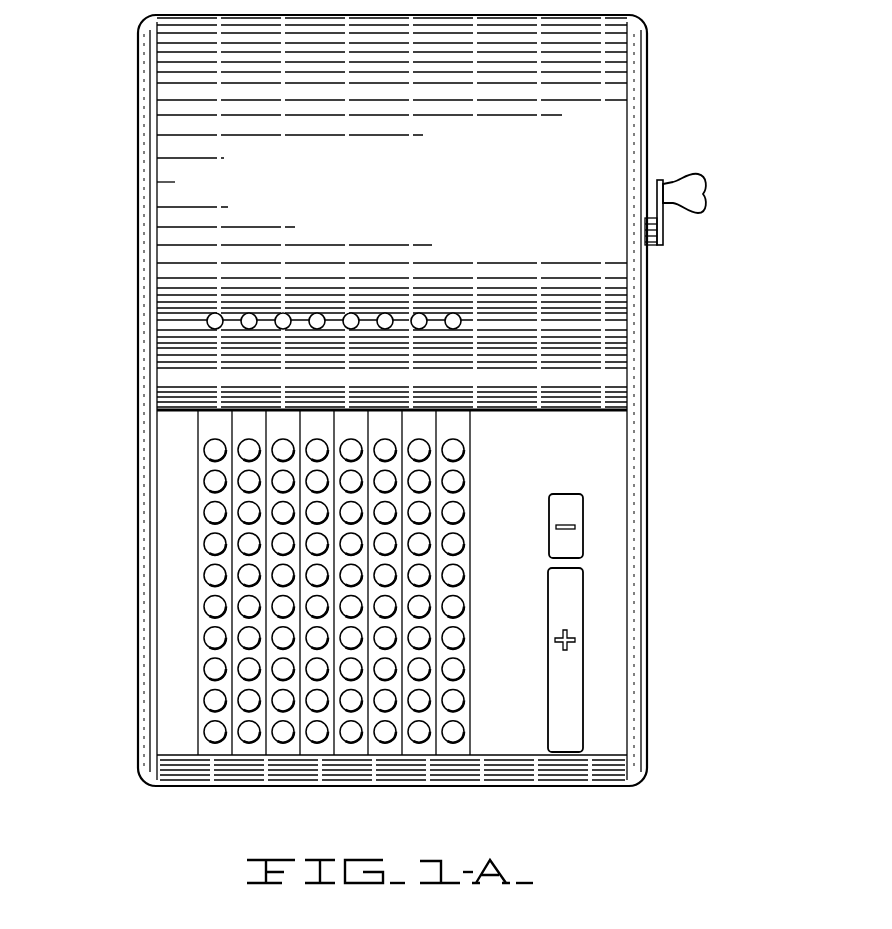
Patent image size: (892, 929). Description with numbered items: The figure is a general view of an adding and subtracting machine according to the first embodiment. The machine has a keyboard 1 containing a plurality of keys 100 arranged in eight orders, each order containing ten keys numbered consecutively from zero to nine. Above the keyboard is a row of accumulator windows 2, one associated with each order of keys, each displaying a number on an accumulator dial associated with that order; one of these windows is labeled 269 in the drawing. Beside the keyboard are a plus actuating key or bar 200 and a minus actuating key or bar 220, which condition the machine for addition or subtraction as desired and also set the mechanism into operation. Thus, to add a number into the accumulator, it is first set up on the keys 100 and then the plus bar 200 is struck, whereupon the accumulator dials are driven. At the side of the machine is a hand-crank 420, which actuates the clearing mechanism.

The keyboard 1 is at (207, 585).
The accumulator windows 2 is at (286, 314).
The indicator window 269 is at (213, 318).
The keys 100 is at (462, 522).
The plus actuating key or bar 200 is at (568, 663).
The minus actuating key or bar 220 is at (576, 537).
The hand-crank 420 is at (701, 189).